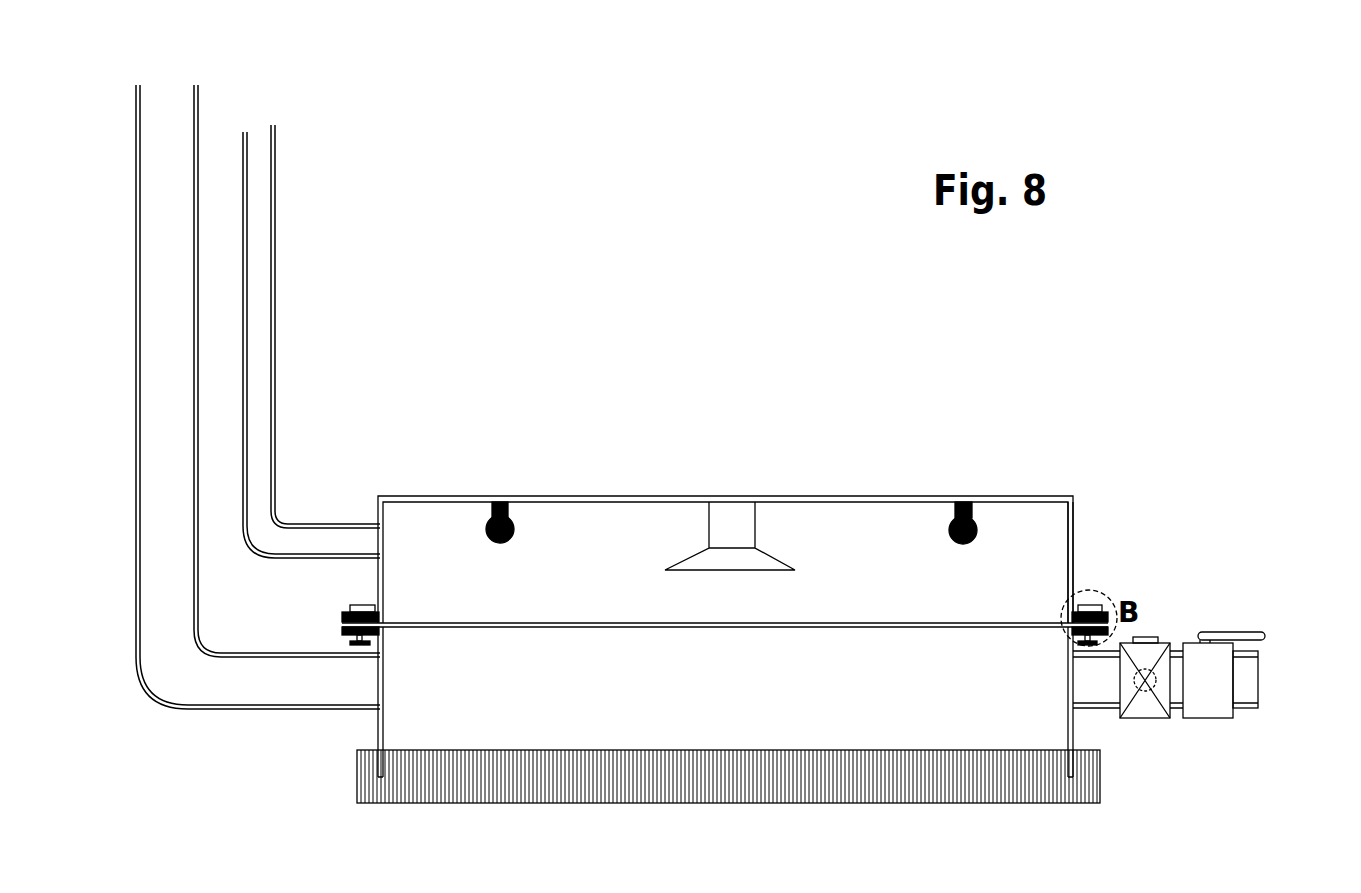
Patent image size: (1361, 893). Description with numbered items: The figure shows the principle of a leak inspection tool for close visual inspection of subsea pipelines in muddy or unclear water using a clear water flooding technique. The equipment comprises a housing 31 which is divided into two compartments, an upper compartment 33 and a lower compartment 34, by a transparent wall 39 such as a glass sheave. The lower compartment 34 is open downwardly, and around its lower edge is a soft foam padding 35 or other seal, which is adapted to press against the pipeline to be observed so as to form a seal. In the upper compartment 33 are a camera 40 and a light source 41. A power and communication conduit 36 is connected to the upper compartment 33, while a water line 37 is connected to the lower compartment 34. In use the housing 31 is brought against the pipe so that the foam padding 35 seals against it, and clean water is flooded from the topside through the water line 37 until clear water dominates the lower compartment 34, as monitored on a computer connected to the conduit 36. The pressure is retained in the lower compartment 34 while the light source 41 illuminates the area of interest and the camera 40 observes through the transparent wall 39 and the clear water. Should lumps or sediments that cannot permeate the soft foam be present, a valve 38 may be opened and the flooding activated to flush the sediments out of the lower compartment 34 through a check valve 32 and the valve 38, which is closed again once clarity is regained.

The housing 31 is at (540, 498).
The check valve 32 is at (1150, 640).
The upper compartment 33 is at (1015, 558).
The lower compartment 34 is at (418, 703).
The soft foam padding 35 is at (1100, 775).
The power and communication conduit 36 is at (255, 428).
The water line 37 is at (150, 497).
The valve 38 is at (1212, 642).
The transparent wall 39 is at (517, 620).
The camera 40 is at (733, 525).
The light source 41 is at (977, 522).